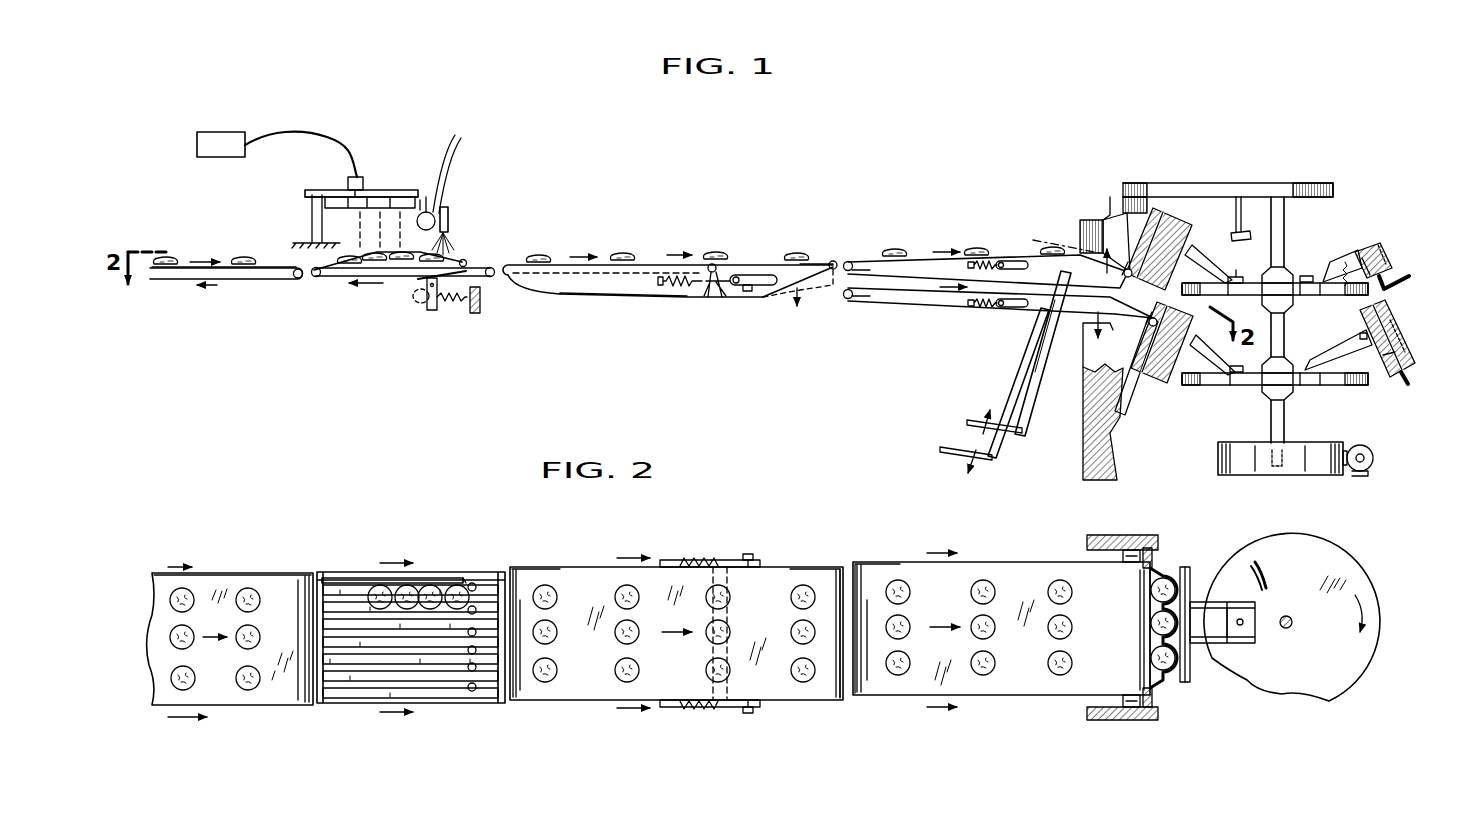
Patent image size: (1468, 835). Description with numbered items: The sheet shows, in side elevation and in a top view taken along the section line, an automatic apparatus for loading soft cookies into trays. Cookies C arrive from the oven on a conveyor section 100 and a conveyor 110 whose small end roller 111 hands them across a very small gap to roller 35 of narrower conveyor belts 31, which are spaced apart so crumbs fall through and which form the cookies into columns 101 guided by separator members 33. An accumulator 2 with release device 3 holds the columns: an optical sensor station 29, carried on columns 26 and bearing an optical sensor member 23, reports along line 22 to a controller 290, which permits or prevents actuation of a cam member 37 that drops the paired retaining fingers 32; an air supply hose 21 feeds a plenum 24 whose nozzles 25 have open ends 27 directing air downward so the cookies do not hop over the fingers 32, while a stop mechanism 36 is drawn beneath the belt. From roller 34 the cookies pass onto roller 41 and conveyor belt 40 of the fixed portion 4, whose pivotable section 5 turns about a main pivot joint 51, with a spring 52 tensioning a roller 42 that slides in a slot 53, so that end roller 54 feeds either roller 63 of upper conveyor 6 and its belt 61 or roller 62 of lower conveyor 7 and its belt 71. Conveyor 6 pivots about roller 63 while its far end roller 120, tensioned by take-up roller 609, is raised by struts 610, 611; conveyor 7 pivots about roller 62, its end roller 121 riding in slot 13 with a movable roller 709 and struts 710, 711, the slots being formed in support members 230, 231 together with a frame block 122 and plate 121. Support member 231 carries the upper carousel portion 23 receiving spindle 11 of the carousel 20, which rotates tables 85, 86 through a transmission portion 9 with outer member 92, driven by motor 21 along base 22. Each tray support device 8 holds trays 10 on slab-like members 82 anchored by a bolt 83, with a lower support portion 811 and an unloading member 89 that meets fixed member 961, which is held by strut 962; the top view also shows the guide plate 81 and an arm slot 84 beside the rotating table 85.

In FIG. 1, the accumulator 2 is at (392, 142).
In FIG. 1, the release device 3 is at (478, 243).
In FIG. 2, the release device 3 is at (462, 553).
In FIG. 1, the fixed portion of pivotable conveyor belt 4 is at (650, 240).
In FIG. 2, the fixed portion of pivotable conveyor belt 4 is at (605, 553).
In FIG. 1, the pivotable section 5 is at (760, 240).
In FIG. 2, the pivotable section 5 is at (792, 553).
In FIG. 1, the upper movable conveyor belt 6 is at (877, 237).
In FIG. 2, the upper movable conveyor belt 6 is at (912, 552).
In FIG. 1, the lower movable conveyor belt 7 is at (868, 318).
In FIG. 1, the tray support device 8 is at (1408, 237).
In FIG. 1, the transmission portion 9 is at (1293, 344).
In FIG. 1, the tray 10 is at (1400, 301).
In FIG. 1, the spindle 11 is at (1283, 208).
In FIG. 2, the spindle 11 is at (1293, 622).
In FIG. 1, the slot 13 is at (1128, 372).
In FIG. 2, the slot 13 is at (1123, 570).
In FIG. 1, the carousel 20 is at (1285, 152).
In FIG. 1, the air supply hose / motor 21 is at (1402, 441).
In FIG. 1, the line / carousel base 22 is at (322, 133).
In FIG. 1, the optical sensor member / upper carousel support portion 23 is at (355, 200).
In FIG. 1, the plenum 24 is at (425, 208).
In FIG. 1, the nozzle 25 is at (448, 210).
In FIG. 1, the column 26 is at (311, 217).
In FIG. 1, the nozzle open end 27 is at (449, 224).
In FIG. 1, the optical sensor station 29 is at (318, 191).
In FIG. 2, the narrower conveyor belts 31 is at (437, 679).
In FIG. 1, the retaining finger 32 is at (466, 262).
In FIG. 2, the retaining finger 32 is at (474, 584).
In FIG. 1, the separator member 33 is at (373, 259).
In FIG. 2, the separator member 33 is at (329, 580).
In FIG. 1, the roller 34 is at (491, 278).
In FIG. 1, the conveyor belt roller 35 is at (315, 278).
In FIG. 1, the stop mechanism 36 is at (430, 311).
In FIG. 1, the cam member 37 is at (417, 279).
In FIG. 1, the conveyor belt 40 is at (565, 259).
In FIG. 2, the conveyor belt 40 is at (780, 612).
In FIG. 1, the roller 41 is at (517, 289).
In FIG. 1, the roller 42 is at (747, 291).
In FIG. 2, the roller 42 is at (748, 554).
In FIG. 1, the main pivot joint 51 is at (713, 263).
In FIG. 2, the main pivot joint 51 is at (720, 560).
In FIG. 1, the spring 52 is at (674, 288).
In FIG. 2, the spring 52 is at (690, 557).
In FIG. 1, the slot 53 is at (771, 286).
In FIG. 1, the end roller 54 is at (833, 262).
In FIG. 2, the end roller 54 is at (842, 566).
In FIG. 1, the conveyor belt 61 is at (913, 258).
In FIG. 2, the conveyor belt 61 is at (1107, 610).
In FIG. 1, the roller 62 is at (847, 299).
In FIG. 1, the roller 63 is at (848, 261).
In FIG. 2, the roller 63 is at (855, 566).
In FIG. 1, the conveyor belt 71 is at (897, 288).
In FIG. 1, the guide plate 81 is at (1163, 384).
In FIG. 2, the guide plate 81 is at (1184, 567).
In FIG. 1, the slab-like member 82 is at (1183, 220).
In FIG. 2, the slab-like member 82 is at (1218, 602).
In FIG. 1, the bolt 83 is at (1240, 276).
In FIG. 2, the bolt 83 is at (1244, 620).
In FIG. 2, the arm slot 84 is at (1258, 634).
In FIG. 1, the upper carousel support surface 85 is at (1320, 296).
In FIG. 2, the upper carousel support surface 85 is at (1357, 674).
In FIG. 1, the lower carousel support surface 86 is at (1342, 386).
In FIG. 1, the unloading member 89 is at (1355, 250).
In FIG. 1, the outer member 92 is at (1287, 266).
In FIG. 1, the conveyor section 100 is at (153, 212).
In FIG. 2, the conveyor section 100 is at (228, 559).
In FIG. 2, the row / column of cookies 101 is at (372, 592).
In FIG. 1, the conveyor 110 is at (263, 258).
In FIG. 2, the conveyor 110 is at (293, 627).
In FIG. 1, the end conveyor belt roller 111 is at (296, 280).
In FIG. 1, the far end roller 120 is at (1100, 228).
In FIG. 2, the far end roller 120 is at (1152, 561).
In FIG. 1, the end roller 121 is at (1088, 334).
In FIG. 1, the frame block 122 is at (1135, 212).
In FIG. 1, the support member 230 is at (1115, 460).
In FIG. 2, the support member 230 is at (1117, 721).
In FIG. 1, the support member 231 is at (1080, 223).
In FIG. 2, the support member 231 is at (1112, 535).
In FIG. 1, the controller 290 is at (227, 131).
In FIG. 1, the take-up roller 609 is at (1012, 261).
In FIG. 1, the strut 610 is at (1034, 410).
In FIG. 1, the strut 611 is at (1010, 448).
In FIG. 1, the movable roller 709 is at (1012, 309).
In FIG. 1, the strut 710 is at (1017, 387).
In FIG. 1, the strut 711 is at (947, 444).
In FIG. 1, the lower support portion 811 is at (1403, 271).
In FIG. 1, the fixed member 961 is at (1237, 241).
In FIG. 2, the fixed member 961 is at (1268, 587).
In FIG. 1, the strut 962 is at (1238, 226).
In FIG. 2, the strut 962 is at (1264, 580).